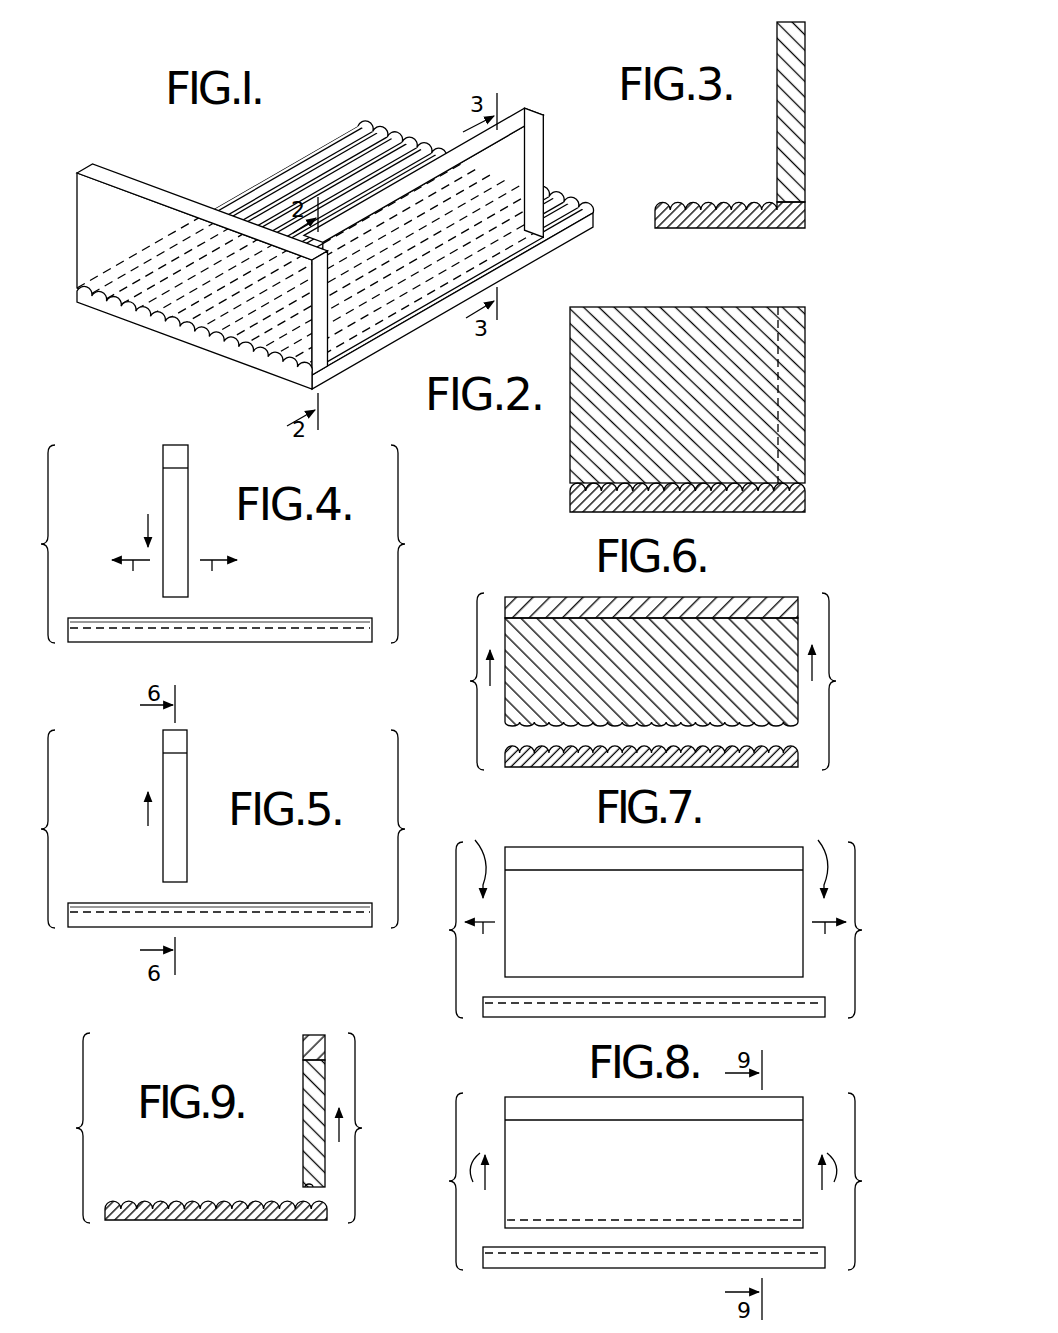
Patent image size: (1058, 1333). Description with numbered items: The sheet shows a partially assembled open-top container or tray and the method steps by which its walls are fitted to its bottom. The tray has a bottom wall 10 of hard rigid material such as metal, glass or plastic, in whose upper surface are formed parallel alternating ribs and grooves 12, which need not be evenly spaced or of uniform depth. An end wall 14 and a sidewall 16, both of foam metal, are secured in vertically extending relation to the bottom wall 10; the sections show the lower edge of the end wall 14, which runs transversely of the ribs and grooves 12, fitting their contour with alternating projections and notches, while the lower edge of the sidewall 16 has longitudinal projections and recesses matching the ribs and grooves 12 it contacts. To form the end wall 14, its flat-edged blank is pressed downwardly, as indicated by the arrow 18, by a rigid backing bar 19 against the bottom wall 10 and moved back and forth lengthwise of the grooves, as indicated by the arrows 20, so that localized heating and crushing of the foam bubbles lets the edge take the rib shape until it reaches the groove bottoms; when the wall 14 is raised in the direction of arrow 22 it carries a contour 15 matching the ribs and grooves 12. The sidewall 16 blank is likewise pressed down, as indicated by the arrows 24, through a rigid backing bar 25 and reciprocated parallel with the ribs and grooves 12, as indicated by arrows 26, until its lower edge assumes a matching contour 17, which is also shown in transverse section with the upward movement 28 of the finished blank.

In FIG. 1, the bottom wall 10 is at (320, 243).
In FIG. 3, the bottom wall 10 is at (730, 188).
In FIG. 2, the bottom wall 10 is at (659, 516).
In FIG. 4, the bottom wall 10 is at (220, 610).
In FIG. 5, the bottom wall 10 is at (220, 893).
In FIG. 6, the bottom wall 10 is at (651, 778).
In FIG. 7, the bottom wall 10 is at (654, 1032).
In FIG. 8, the bottom wall 10 is at (654, 1281).
In FIG. 9, the bottom wall 10 is at (216, 1215).
In FIG. 1, the ribs and grooves 12 is at (296, 188).
In FIG. 3, the ribs and grooves 12 is at (752, 200).
In FIG. 2, the ribs and grooves 12 is at (752, 490).
In FIG. 4, the ribs and grooves 12 is at (341, 628).
In FIG. 5, the ribs and grooves 12 is at (338, 903).
In FIG. 6, the ribs and grooves 12 is at (770, 749).
In FIG. 7, the ribs and grooves 12 is at (801, 1004).
In FIG. 8, the ribs and grooves 12 is at (622, 1254).
In FIG. 9, the ribs and grooves 12 is at (199, 1201).
In FIG. 1, the end wall 14 is at (88, 249).
In FIG. 2, the end wall 14 is at (686, 322).
In FIG. 4, the end wall 14 is at (154, 521).
In FIG. 5, the end wall 14 is at (152, 806).
In FIG. 6, the end wall 14 is at (639, 652).
In FIG. 5, the contour 15 is at (173, 873).
In FIG. 6, the contour 15 is at (522, 725).
In FIG. 1, the sidewall 16 is at (546, 167).
In FIG. 3, the sidewall 16 is at (800, 115).
In FIG. 2, the sidewall 16 is at (782, 400).
In FIG. 7, the sidewall 16 is at (654, 894).
In FIG. 8, the sidewall 16 is at (640, 1149).
In FIG. 9, the sidewall 16 is at (289, 1092).
In FIG. 8, the contour 17 is at (560, 1220).
In FIG. 9, the contour 17 is at (312, 1187).
In FIG. 4, the arrow 18 is at (148, 524).
In FIG. 4, the backing bar 19 is at (163, 461).
In FIG. 5, the backing bar 19 is at (163, 744).
In FIG. 6, the backing bar 19 is at (543, 598).
In FIG. 4, the arrows 20 is at (174, 582).
In FIG. 5, the arrow 22 is at (146, 812).
In FIG. 7, the arrows 24 is at (649, 856).
In FIG. 7, the backing bar 25 is at (545, 848).
In FIG. 8, the backing bar 25 is at (515, 1100).
In FIG. 9, the backing bar 25 is at (313, 1040).
In FIG. 7, the arrows 26 is at (655, 942).
In FIG. 8, the rotational movement arrows 28 is at (653, 1157).
In FIG. 9, the rotational movement arrows 28 is at (337, 1130).